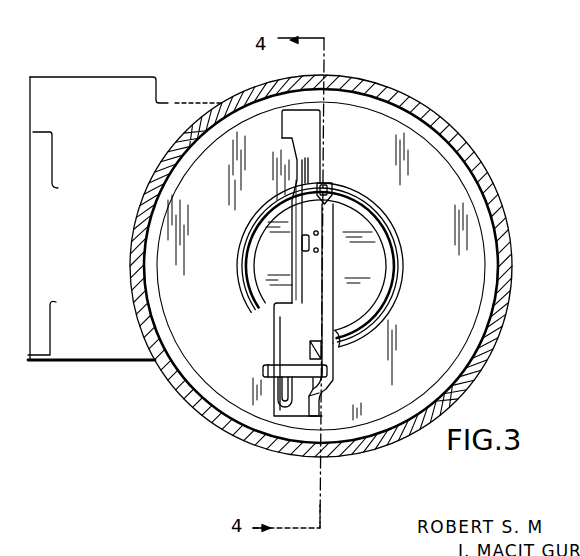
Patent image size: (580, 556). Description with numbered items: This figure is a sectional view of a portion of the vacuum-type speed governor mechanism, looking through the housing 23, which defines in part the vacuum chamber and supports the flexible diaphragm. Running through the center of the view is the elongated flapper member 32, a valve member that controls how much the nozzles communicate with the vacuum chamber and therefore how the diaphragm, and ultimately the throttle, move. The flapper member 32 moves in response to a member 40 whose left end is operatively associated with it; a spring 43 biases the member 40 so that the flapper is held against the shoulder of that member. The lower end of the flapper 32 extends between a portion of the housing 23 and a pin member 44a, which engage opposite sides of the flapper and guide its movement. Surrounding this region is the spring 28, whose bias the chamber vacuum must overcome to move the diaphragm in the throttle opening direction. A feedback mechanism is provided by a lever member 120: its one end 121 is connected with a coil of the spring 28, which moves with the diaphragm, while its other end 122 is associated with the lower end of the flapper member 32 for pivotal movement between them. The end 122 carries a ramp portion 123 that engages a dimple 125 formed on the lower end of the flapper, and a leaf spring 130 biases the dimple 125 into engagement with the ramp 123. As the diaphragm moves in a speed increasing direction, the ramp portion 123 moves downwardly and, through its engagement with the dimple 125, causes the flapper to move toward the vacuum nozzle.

The housing 23 is at (462, 145).
The spring 28 is at (404, 252).
The flapper member 32 is at (305, 170).
The member 40 is at (302, 242).
The spring 43 is at (319, 233).
The pin member 44a is at (263, 371).
The lever member 120 is at (333, 278).
The end 121 is at (333, 190).
The end 122 is at (320, 394).
The ramp portion 123 is at (313, 350).
The dimple 125 is at (303, 418).
The leaf spring 130 is at (283, 415).